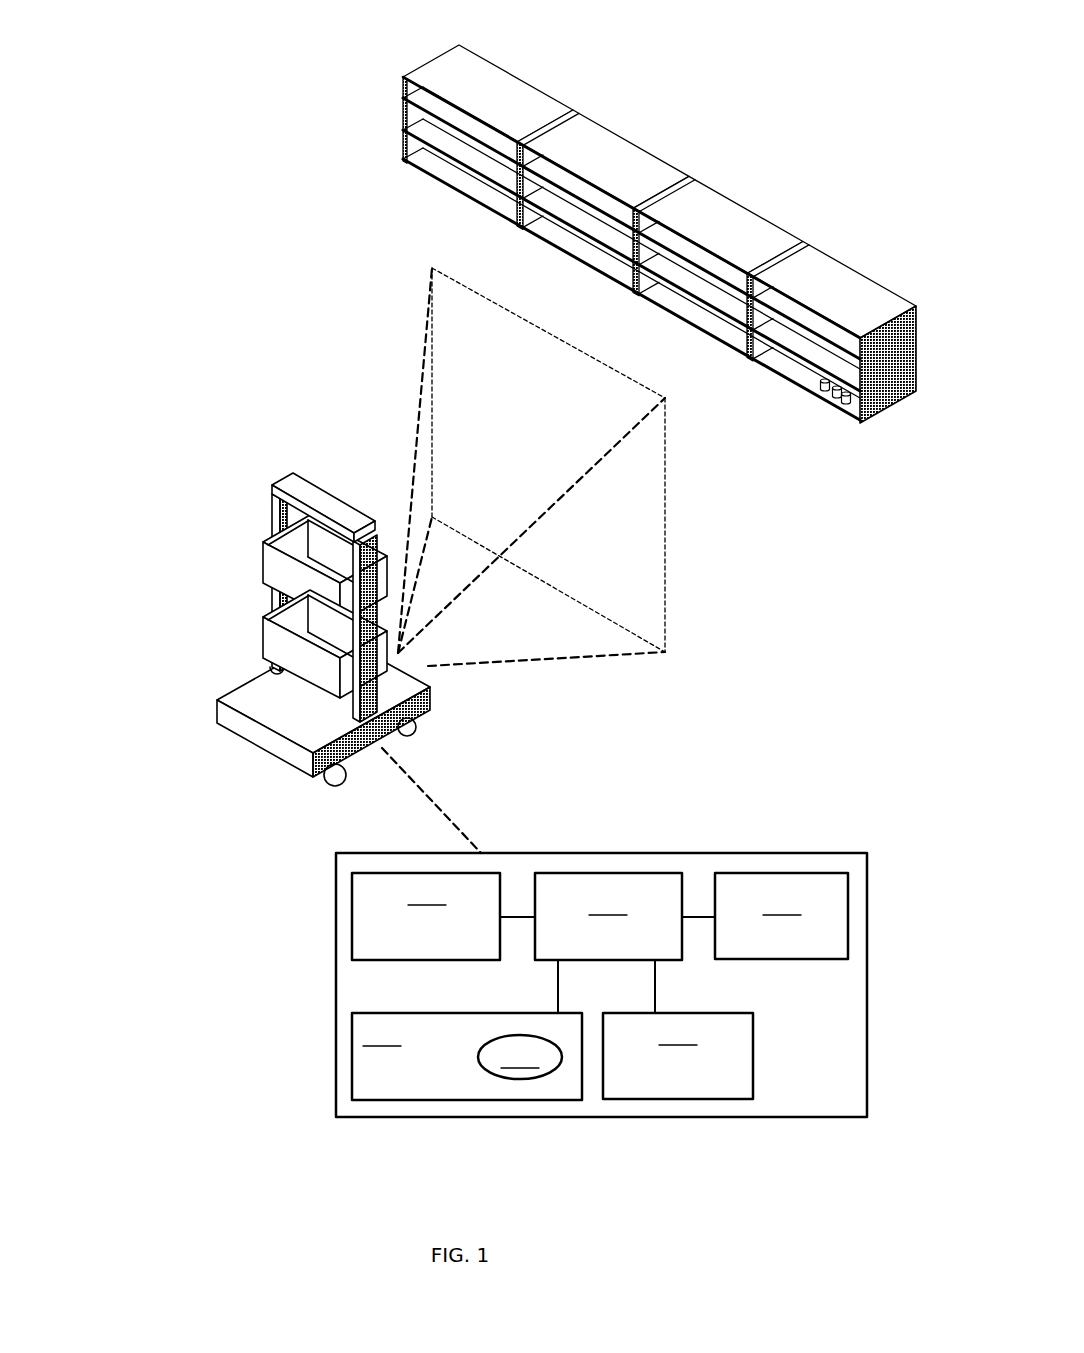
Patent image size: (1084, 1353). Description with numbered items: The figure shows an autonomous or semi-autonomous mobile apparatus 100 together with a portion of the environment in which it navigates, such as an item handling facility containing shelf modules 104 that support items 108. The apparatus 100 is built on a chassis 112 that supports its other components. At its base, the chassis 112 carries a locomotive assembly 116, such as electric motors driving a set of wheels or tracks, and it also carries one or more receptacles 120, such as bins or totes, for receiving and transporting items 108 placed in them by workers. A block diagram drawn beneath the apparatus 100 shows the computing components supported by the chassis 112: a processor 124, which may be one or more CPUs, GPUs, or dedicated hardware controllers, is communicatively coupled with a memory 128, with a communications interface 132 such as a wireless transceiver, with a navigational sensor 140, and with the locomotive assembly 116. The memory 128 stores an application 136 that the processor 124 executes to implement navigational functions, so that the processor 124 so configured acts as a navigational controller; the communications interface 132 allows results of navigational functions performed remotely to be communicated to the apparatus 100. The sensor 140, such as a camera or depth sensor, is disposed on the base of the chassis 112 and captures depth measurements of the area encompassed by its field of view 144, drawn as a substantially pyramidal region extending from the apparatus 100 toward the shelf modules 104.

The mobile apparatus 100 is at (417, 731).
The shelf module 104 is at (778, 195).
The items 108 is at (848, 407).
The chassis 112 is at (233, 727).
The locomotive assembly 116 is at (333, 776).
The receptacles 120 is at (263, 563).
The processor 124 is at (608, 916).
The memory 128 is at (467, 1056).
The communications interface 132 is at (426, 916).
The application 136 is at (520, 1057).
The navigational sensor 140 is at (781, 916).
The field of view 144 is at (417, 411).